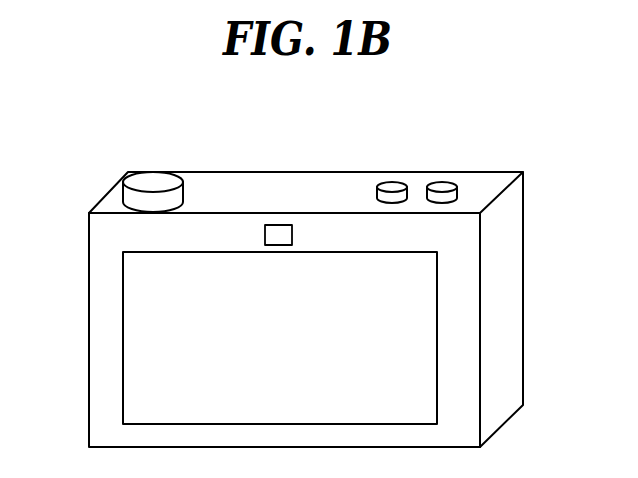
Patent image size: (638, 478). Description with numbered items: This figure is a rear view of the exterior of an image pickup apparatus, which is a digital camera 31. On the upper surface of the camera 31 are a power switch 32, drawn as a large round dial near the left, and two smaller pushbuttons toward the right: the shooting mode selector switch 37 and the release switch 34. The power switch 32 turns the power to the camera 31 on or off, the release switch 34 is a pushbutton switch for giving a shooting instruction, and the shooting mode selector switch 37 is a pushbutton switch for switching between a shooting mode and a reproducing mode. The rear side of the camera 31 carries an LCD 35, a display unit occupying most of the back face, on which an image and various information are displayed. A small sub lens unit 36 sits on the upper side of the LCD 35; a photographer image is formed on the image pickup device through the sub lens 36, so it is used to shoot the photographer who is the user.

The camera 31 is at (265, 172).
The power switch 32 is at (157, 186).
The release switch 34 is at (443, 184).
The LCD 35 is at (388, 370).
The sub lens unit 36 is at (265, 237).
The shooting mode selector switch 37 is at (392, 184).